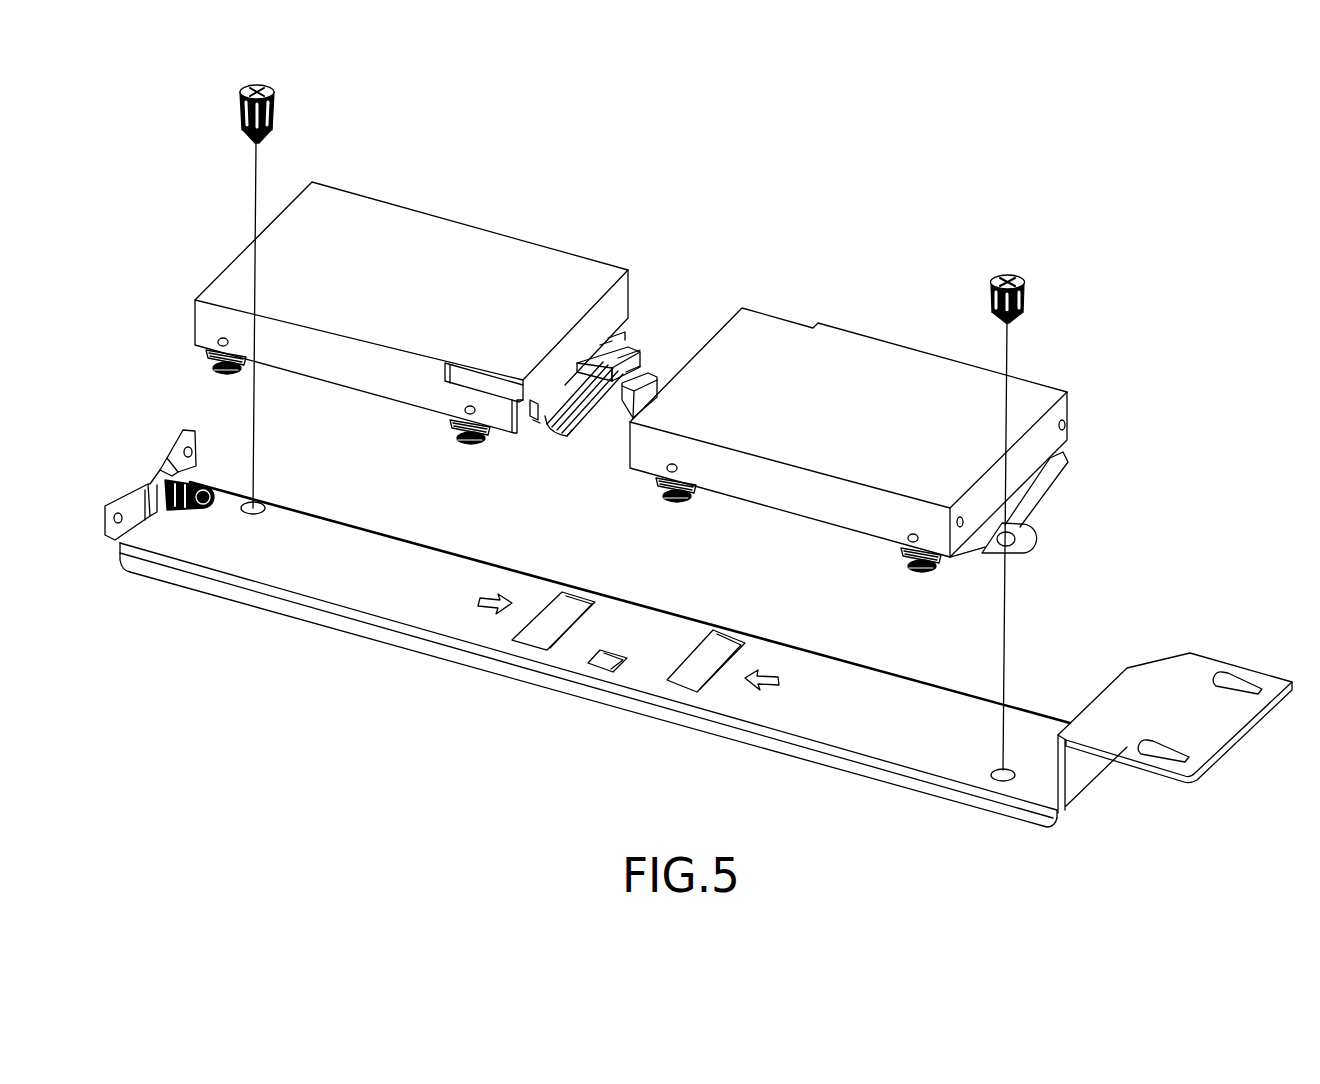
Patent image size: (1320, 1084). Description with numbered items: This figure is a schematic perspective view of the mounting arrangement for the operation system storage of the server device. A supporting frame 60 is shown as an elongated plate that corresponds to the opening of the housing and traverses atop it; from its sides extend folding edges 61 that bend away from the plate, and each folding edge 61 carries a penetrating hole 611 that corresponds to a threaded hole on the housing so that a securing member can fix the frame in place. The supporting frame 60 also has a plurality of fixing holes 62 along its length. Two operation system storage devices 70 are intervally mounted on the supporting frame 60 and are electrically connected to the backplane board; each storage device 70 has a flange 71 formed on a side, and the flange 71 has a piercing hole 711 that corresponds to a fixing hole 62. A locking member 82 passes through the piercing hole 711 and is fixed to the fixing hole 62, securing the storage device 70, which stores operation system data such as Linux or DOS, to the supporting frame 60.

The supporting frame 60 is at (414, 671).
The folding edge 61 is at (1222, 725).
The penetrating hole 611 is at (1223, 680).
The fixing hole 62 is at (1008, 769).
The operation system (OS) storage device 70 is at (853, 313).
The flange 71 is at (1030, 533).
The piercing hole 711 is at (1018, 524).
The locking member 82 is at (1026, 278).